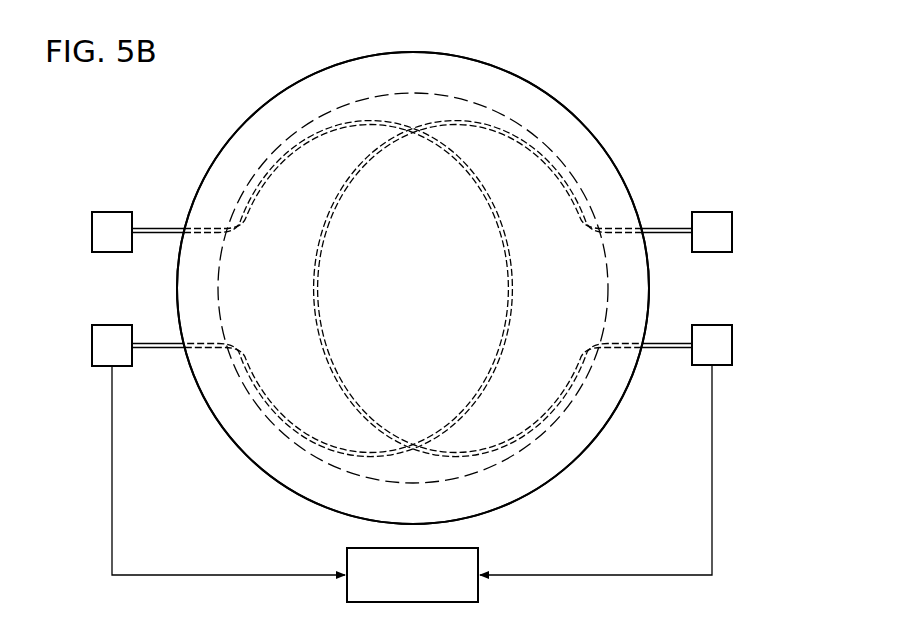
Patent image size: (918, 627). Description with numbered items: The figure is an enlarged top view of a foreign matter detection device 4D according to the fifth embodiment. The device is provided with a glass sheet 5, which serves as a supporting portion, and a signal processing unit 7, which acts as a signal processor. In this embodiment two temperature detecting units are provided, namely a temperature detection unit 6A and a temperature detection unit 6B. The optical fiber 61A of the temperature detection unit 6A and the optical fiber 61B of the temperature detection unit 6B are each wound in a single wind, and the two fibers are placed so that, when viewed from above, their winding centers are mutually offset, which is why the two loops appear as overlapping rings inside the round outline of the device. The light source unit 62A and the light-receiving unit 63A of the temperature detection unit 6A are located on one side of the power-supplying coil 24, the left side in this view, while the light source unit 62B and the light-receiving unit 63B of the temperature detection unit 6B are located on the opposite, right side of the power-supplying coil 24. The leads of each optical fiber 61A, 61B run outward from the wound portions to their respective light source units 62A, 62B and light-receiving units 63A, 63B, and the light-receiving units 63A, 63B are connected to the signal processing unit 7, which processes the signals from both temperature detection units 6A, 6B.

The foreign matter detection device 4D is at (676, 86).
The glass sheet 5 is at (514, 85).
The power-supplying coil 24 is at (277, 430).
The optical fiber 61A is at (288, 140).
The optical fiber 61B is at (545, 145).
The light source unit 62A is at (92, 230).
The light-receiving unit 63A is at (92, 344).
The light source unit 62B is at (724, 231).
The light-receiving unit 63B is at (724, 344).
The temperature detection unit 6A is at (104, 331).
The temperature detection unit 6B is at (723, 336).
The signal processing unit 7 is at (480, 553).